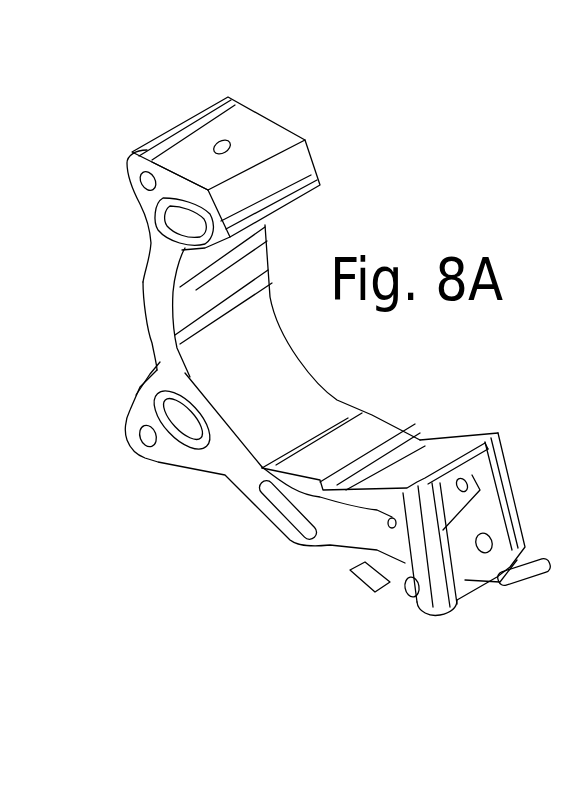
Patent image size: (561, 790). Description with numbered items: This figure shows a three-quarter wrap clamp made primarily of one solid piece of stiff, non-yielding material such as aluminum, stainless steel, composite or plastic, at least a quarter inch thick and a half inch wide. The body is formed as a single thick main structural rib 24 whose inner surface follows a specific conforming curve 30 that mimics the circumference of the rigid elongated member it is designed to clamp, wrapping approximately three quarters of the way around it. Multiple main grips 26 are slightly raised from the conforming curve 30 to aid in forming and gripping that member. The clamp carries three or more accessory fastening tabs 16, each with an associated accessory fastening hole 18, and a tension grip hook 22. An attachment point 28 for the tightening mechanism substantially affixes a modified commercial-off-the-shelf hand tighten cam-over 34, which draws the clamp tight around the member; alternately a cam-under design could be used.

The accessory fastening tab 16 is at (417, 600).
The accessory fastening hole 18 is at (150, 438).
The tension grip hook 22 is at (526, 580).
The main structural rib 24 is at (157, 303).
The main grip 26 is at (367, 433).
The attachment point for tightening mechanism 28 is at (389, 526).
The specific conforming curve 30 is at (190, 377).
The hand tighten cam-over 34 is at (470, 570).